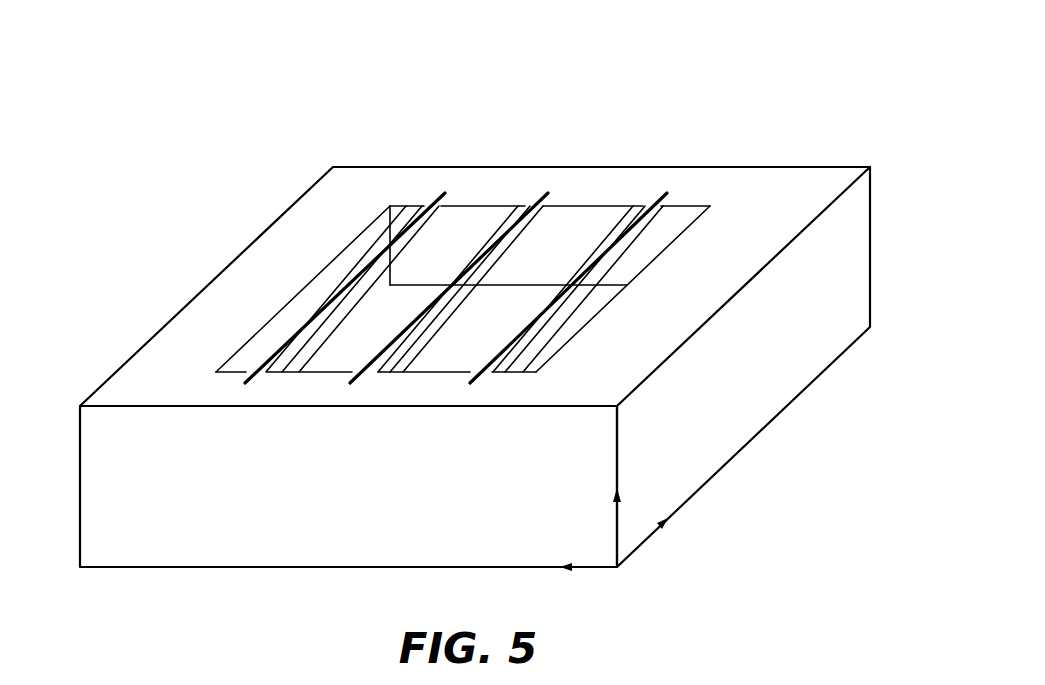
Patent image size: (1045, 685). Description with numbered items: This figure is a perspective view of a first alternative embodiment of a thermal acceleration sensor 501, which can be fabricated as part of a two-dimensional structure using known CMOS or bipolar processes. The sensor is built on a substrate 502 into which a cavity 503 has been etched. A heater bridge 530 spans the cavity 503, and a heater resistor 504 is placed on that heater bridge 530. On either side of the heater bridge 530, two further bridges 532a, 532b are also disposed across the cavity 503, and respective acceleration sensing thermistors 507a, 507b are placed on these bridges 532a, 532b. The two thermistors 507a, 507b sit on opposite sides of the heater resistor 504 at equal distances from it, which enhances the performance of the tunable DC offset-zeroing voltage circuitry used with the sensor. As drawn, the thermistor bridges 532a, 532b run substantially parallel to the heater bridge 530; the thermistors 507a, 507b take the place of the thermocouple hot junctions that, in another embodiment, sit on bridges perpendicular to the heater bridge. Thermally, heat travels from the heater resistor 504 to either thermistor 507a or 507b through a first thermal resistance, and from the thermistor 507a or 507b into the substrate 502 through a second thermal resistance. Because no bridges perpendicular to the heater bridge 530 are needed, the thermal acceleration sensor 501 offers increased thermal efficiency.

The thermal acceleration sensor 501 is at (189, 125).
The substrate 502 is at (488, 547).
The cavity 503 is at (468, 209).
The heater resistor 504 is at (548, 197).
The acceleration sensing thermistor 507a is at (437, 195).
The acceleration sensing thermistor 507b is at (662, 195).
The heater bridge 530 is at (505, 206).
The bridge 532a is at (345, 277).
The bridge 532b is at (633, 206).